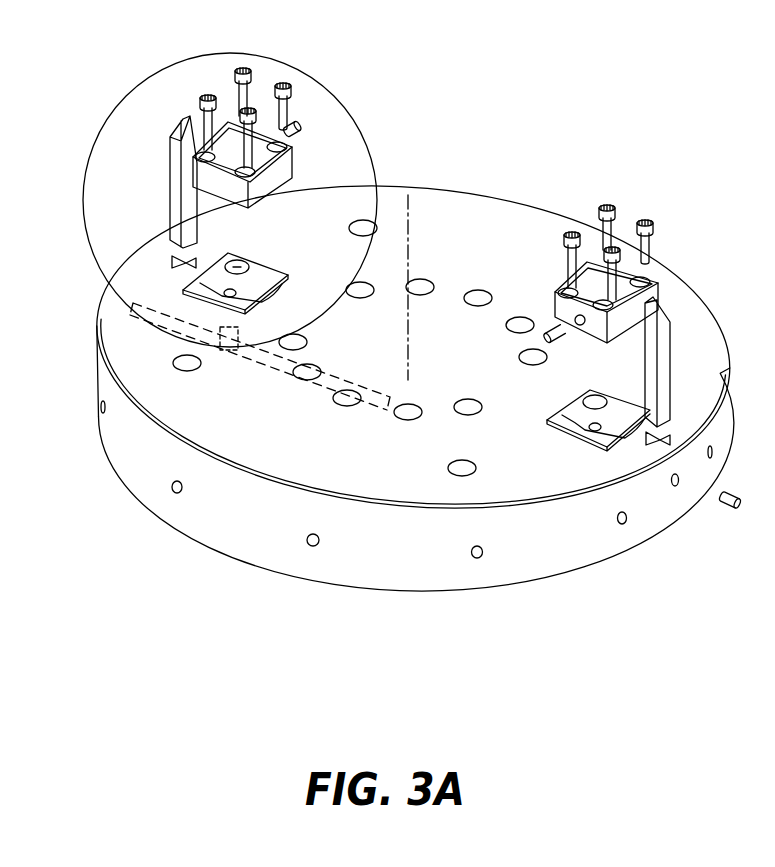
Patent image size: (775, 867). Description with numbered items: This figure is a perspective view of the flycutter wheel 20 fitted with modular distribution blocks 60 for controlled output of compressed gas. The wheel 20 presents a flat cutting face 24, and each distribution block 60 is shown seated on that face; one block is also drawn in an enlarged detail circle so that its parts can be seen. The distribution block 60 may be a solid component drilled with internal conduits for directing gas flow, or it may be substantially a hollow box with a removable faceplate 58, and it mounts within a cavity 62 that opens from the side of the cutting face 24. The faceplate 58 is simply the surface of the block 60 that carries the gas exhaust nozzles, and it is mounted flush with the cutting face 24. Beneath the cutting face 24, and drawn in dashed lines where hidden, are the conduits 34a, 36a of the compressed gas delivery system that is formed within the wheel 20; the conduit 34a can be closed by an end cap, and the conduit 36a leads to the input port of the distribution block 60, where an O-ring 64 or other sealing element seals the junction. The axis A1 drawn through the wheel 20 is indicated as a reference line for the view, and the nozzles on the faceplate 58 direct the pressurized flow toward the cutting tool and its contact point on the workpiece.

The flycutter wheel 20 is at (42, 569).
The cutting face 24 is at (472, 212).
The conduit 34a is at (260, 367).
The conduit 36a is at (232, 345).
The faceplate 58 is at (203, 157).
The modular distribution block 60 is at (297, 155).
The cavity 62 is at (253, 283).
The O-ring 64 is at (227, 268).
The axis A1 is at (410, 197).